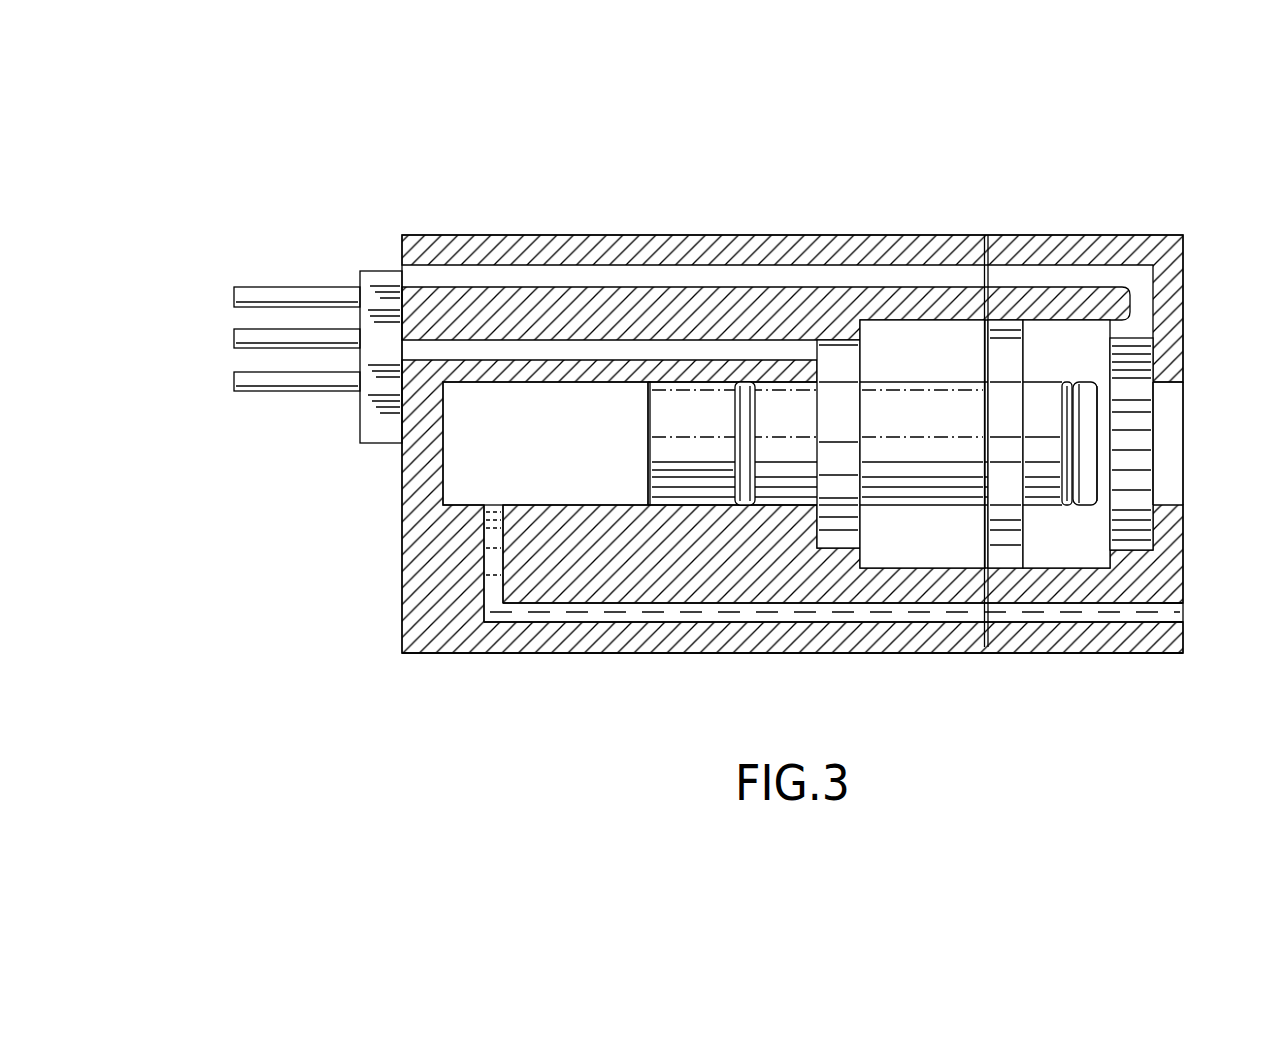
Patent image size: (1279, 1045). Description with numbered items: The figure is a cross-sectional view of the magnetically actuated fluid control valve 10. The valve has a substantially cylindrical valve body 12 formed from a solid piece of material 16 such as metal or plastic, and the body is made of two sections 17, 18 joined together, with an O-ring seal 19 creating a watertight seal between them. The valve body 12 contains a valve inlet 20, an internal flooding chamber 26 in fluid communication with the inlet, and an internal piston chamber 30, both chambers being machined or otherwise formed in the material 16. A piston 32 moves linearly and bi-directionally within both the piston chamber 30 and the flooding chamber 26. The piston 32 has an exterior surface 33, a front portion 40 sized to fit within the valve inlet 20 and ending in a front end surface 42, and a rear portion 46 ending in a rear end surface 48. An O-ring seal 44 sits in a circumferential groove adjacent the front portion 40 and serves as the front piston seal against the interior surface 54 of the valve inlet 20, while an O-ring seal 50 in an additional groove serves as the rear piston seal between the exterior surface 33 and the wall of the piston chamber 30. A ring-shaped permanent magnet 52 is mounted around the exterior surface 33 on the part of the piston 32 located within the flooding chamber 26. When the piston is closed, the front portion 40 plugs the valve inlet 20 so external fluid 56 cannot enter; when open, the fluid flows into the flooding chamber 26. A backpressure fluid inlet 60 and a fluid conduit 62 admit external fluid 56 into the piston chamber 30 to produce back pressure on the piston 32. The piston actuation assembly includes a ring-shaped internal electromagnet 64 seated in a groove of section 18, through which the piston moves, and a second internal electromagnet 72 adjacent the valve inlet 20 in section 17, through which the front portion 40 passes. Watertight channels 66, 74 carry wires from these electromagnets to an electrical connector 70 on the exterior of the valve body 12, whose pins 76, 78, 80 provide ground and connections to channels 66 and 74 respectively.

The magnetically actuated fluid control valve 10 is at (548, 143).
The valve body 12 is at (753, 235).
The material 16 is at (437, 546).
The section 17 is at (1130, 655).
The section 18 is at (486, 654).
The seal 19 is at (979, 602).
The valve inlet 20 is at (1170, 442).
The flooding chamber 26 is at (1047, 560).
The piston chamber 30 is at (570, 490).
The piston 32 is at (705, 487).
The exterior surface 33 is at (940, 470).
The front portion 40 is at (1098, 390).
The front end surface 42 is at (1097, 407).
The O ring seal 44 is at (1068, 380).
The rear portion 46 is at (682, 405).
The rear end surface 48 is at (645, 437).
The O ring seal 50 is at (745, 382).
The permanent magnet 52 is at (1005, 330).
The interior surface 54 is at (1170, 383).
The external fluid 56 is at (488, 587).
The backpressure fluid inlet 60 is at (1185, 613).
The fluid conduit 62 is at (580, 615).
The internal electromagnet 64 is at (826, 537).
The channel 66 is at (512, 348).
The electrical connector 70 is at (372, 270).
The internal electromagnet 72 is at (1122, 528).
The channel 74 is at (688, 272).
The connector pin 76 is at (237, 382).
The connector pin 78 is at (237, 340).
The connector pin 80 is at (236, 296).